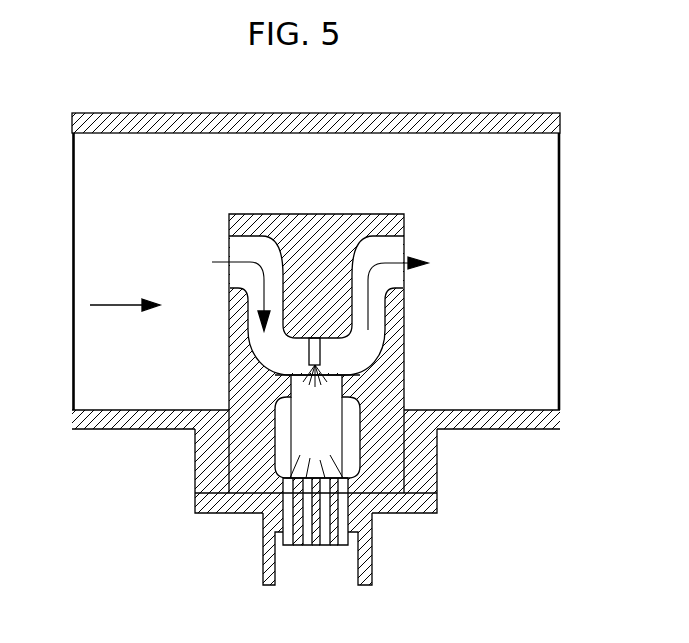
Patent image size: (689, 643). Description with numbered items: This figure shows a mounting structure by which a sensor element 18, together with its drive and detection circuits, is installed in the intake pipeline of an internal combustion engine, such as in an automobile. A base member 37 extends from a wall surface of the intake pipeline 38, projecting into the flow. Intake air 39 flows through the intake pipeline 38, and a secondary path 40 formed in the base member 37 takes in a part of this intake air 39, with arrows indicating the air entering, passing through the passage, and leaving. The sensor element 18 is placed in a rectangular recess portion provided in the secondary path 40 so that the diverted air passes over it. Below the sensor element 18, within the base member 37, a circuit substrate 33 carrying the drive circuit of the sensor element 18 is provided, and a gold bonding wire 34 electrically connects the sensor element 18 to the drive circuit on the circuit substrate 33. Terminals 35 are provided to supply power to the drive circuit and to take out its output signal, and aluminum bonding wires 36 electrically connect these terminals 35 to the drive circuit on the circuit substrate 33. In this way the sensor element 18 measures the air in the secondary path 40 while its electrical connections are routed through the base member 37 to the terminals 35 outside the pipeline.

The sensor element 18 is at (320, 350).
The circuit substrate 33 is at (315, 425).
The gold bonding wire 34 is at (345, 376).
The terminals 35 is at (288, 545).
The aluminum bonding wires 36 is at (300, 463).
The base member 37 is at (242, 375).
The intake pipeline 38 is at (92, 379).
The intake air 39 is at (112, 302).
The secondary path 40 is at (257, 247).